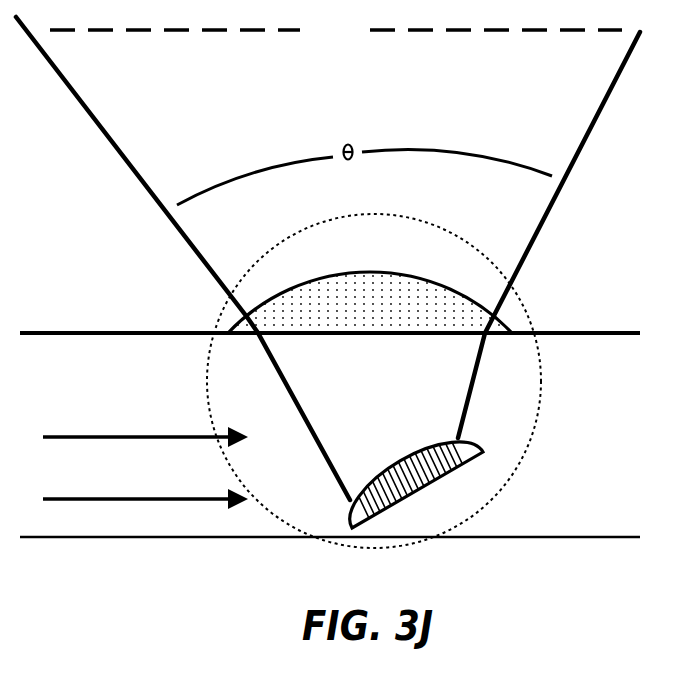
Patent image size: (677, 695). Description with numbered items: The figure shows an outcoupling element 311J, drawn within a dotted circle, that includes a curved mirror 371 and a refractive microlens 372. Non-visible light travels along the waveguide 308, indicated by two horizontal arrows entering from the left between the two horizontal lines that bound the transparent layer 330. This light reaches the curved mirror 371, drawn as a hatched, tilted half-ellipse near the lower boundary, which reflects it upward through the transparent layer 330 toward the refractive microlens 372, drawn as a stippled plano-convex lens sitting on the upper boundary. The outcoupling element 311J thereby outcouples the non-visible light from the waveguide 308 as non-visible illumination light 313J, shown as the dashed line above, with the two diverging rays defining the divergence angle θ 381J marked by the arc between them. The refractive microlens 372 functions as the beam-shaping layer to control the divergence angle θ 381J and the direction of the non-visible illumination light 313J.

The non-visible illumination light 313J is at (336, 31).
The divergence angle θ 381J is at (335, 148).
The outcoupling element 311J is at (510, 283).
The refractive microlens 372 is at (512, 315).
The curved mirror 371 is at (484, 455).
The transparent layer 330 is at (597, 377).
The waveguide 308 is at (105, 481).